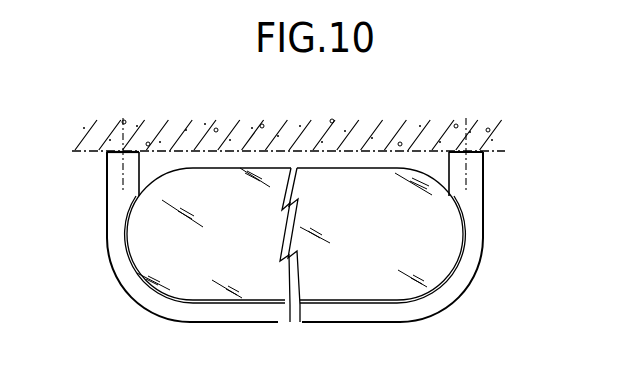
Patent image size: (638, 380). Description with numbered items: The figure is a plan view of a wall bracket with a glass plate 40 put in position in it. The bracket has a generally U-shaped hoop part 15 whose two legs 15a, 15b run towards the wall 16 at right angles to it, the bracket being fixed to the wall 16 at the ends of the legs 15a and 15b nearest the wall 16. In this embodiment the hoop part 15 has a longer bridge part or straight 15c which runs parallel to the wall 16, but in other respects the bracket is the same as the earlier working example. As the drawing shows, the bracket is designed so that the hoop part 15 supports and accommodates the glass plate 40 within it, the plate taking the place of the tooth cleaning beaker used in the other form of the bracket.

The hoop part 15 is at (404, 323).
The leg 15a is at (113, 173).
The leg 15b is at (476, 172).
The bridge part 15c is at (279, 323).
The wall 16 is at (392, 137).
The glass plate 40 is at (155, 243).